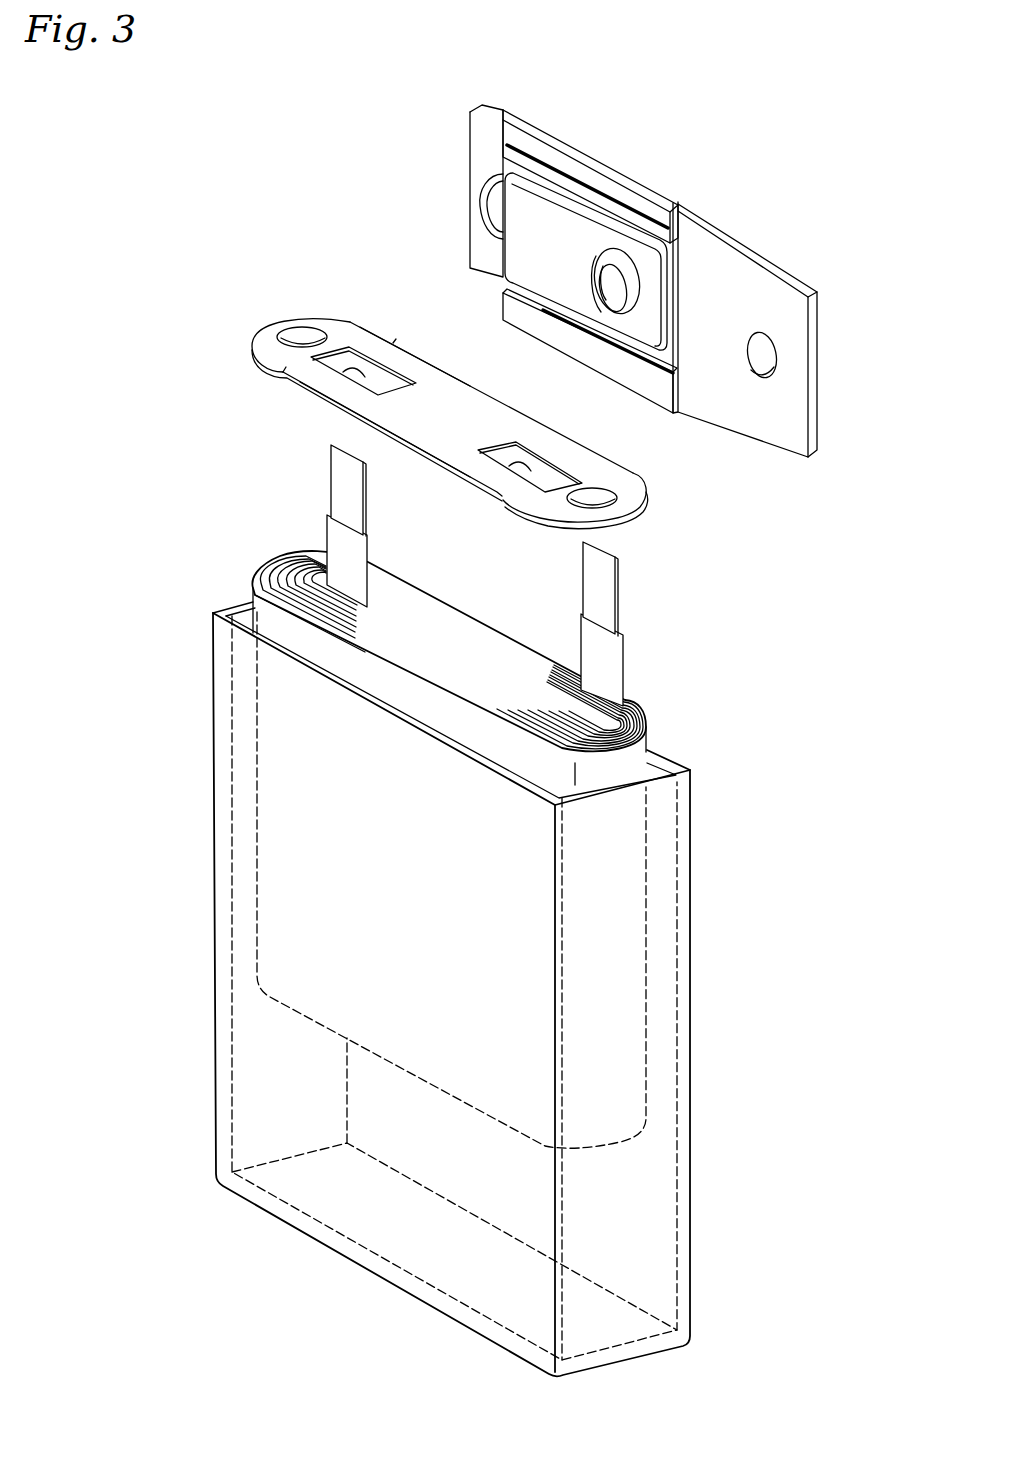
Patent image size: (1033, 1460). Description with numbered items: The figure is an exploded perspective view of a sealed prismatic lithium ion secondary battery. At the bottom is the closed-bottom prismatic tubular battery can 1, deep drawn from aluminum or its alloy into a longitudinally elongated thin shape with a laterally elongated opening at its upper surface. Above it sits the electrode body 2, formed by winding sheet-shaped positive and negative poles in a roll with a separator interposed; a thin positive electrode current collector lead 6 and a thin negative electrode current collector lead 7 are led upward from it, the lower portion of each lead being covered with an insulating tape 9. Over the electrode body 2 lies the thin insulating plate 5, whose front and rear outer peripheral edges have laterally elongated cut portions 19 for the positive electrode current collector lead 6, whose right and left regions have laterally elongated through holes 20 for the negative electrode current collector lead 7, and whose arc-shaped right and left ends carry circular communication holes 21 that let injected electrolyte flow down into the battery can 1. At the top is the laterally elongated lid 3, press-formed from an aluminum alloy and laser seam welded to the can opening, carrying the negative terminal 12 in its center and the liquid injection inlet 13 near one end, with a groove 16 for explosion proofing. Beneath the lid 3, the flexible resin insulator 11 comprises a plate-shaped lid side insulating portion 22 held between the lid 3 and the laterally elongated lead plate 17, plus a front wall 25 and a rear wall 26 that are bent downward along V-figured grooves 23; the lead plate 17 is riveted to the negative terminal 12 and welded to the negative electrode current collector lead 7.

The battery can 1 is at (240, 802).
The electrode body 2 is at (390, 685).
The lid 3 is at (760, 331).
The insulating plate 5 is at (442, 415).
The positive electrode current collector lead 6 is at (598, 590).
The negative electrode current collector lead 7 is at (343, 492).
The insulating tape 9 is at (347, 540).
The insulator 11 is at (573, 269).
The negative terminal 12 is at (632, 300).
The liquid injection inlet 13 is at (755, 373).
The groove for explosion proofing 16 is at (485, 187).
The lead plate 17 is at (517, 245).
The cut portion 19 is at (498, 393).
The through hole 20 is at (347, 368).
The communication hole 21 is at (293, 340).
The lid side insulating portion 22 is at (676, 280).
The V-figured groove 23 is at (555, 173).
The front wall 25 is at (630, 380).
The rear wall 26 is at (630, 195).